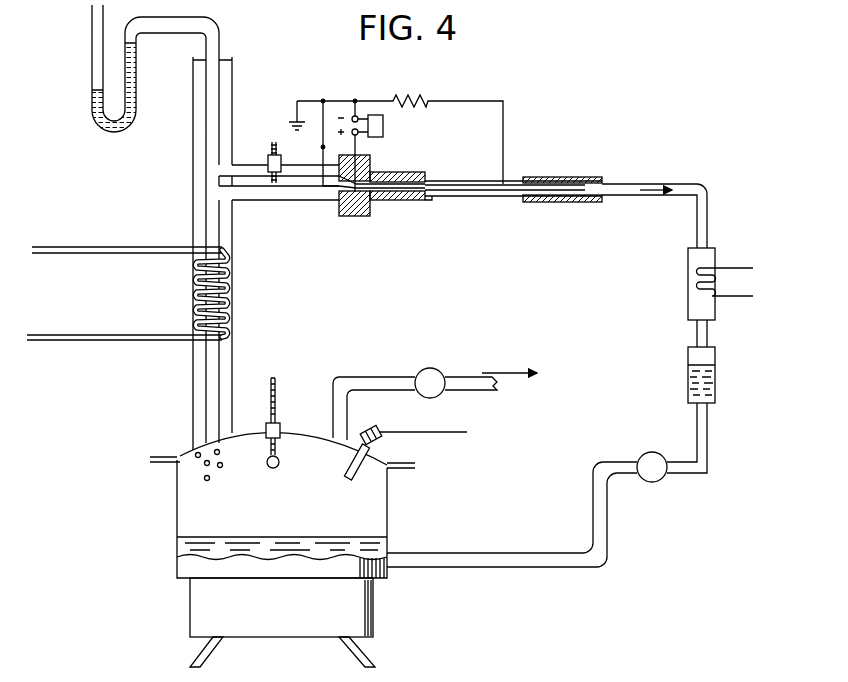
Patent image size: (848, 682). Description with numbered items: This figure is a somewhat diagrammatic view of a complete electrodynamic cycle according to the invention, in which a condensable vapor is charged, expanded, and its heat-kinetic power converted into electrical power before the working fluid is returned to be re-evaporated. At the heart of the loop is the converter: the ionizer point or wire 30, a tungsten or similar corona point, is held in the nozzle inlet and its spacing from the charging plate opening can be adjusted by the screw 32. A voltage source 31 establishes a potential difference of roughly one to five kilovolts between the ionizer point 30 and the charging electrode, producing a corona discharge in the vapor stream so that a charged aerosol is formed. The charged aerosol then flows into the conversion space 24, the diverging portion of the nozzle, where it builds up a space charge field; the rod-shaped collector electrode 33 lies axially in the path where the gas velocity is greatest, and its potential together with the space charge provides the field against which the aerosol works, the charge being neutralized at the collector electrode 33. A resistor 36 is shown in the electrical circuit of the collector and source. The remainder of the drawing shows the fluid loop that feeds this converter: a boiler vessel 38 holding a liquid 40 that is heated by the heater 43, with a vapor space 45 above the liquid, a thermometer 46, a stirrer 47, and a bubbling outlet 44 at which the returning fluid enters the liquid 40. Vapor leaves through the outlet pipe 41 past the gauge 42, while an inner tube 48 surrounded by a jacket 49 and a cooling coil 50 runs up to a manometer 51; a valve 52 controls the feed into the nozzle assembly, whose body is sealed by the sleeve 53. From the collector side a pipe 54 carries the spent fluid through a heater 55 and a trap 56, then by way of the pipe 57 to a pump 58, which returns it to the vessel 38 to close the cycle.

The conversion space 24 is at (393, 193).
The ionizer point or wire 30 is at (337, 190).
The voltage source 31 is at (385, 126).
The screw 32 is at (420, 198).
The collector electrode 33 is at (473, 184).
The resistor 36 is at (414, 101).
The tank 38 is at (177, 514).
The liquid 40 is at (287, 537).
The outlet pipe 41 is at (394, 378).
The valve/gauge 42 is at (441, 373).
The heater 43 is at (303, 626).
The bubbles outlet 44 is at (192, 462).
The vapor space 45 is at (322, 502).
The thermometer 46 is at (300, 372).
The stirrer 47 is at (382, 447).
The inner tube 48 is at (206, 371).
The jacket 49 is at (193, 400).
The cooling coil 50 is at (198, 290).
The manometer 51 is at (108, 132).
The valve 52 is at (273, 150).
The sleeve 53 is at (376, 170).
The pipe 54 is at (626, 184).
The heater 55 is at (715, 256).
The trap 56 is at (715, 382).
The pipe 57 is at (707, 447).
The pump 58 is at (655, 483).